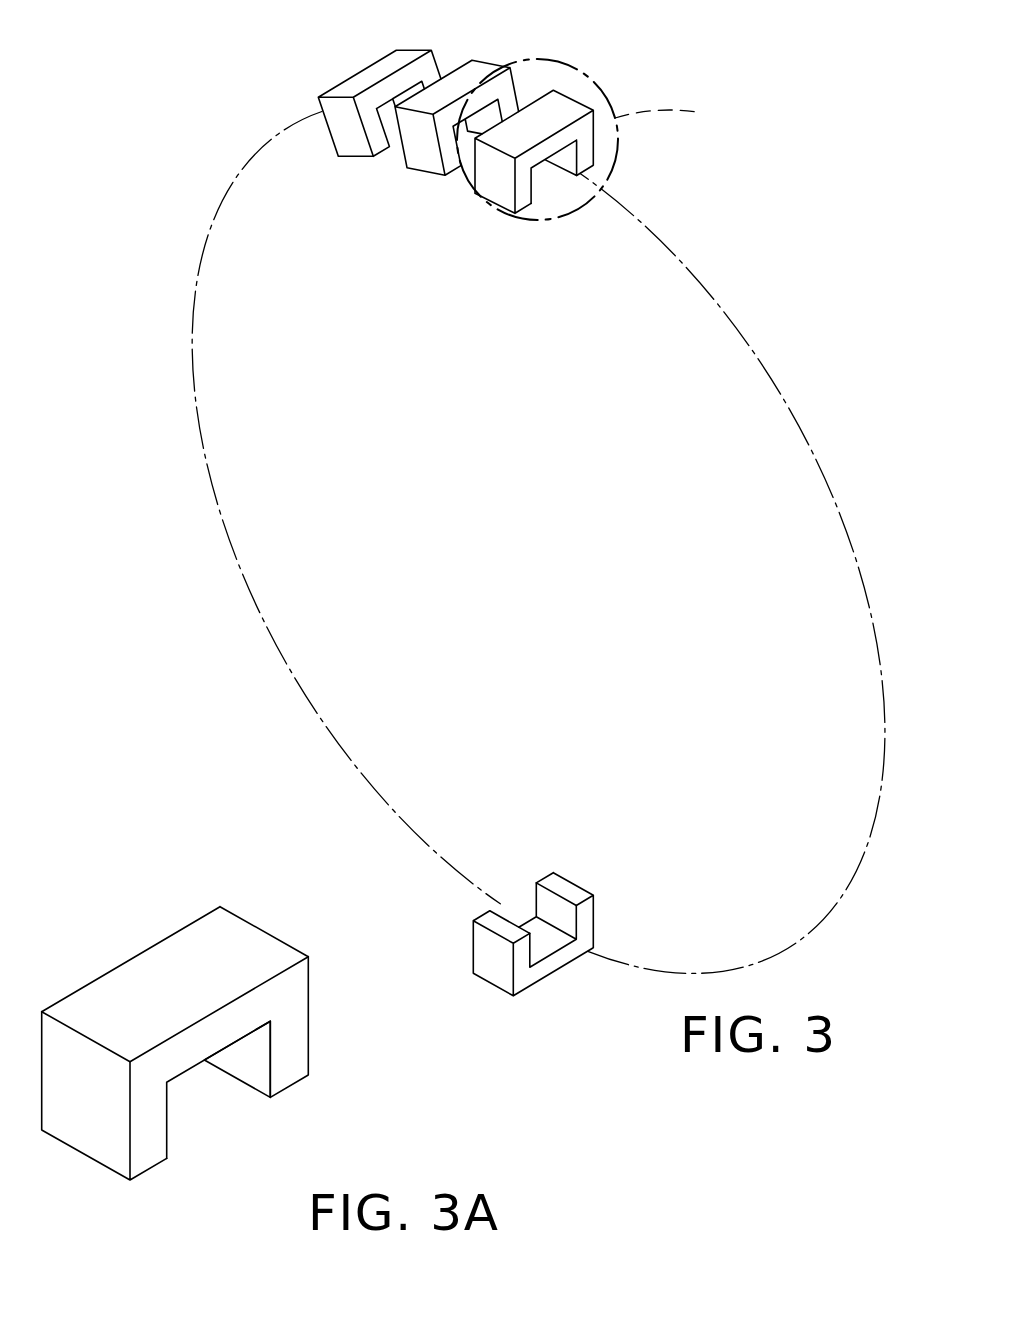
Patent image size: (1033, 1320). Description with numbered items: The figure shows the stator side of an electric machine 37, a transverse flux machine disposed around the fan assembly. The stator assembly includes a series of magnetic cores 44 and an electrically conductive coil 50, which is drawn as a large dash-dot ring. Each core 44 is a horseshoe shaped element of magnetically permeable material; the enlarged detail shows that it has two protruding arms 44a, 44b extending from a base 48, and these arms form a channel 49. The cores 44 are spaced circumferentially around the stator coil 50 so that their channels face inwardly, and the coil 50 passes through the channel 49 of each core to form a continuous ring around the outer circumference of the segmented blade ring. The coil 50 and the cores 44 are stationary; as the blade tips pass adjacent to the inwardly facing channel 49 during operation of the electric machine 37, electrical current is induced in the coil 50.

In FIG. 3, the electric machine 37 is at (112, 57).
In FIG. 3, the magnetic core 44 is at (435, 544).
In FIG. 3A, the magnetic core 44 is at (224, 1060).
In FIG. 3A, the protruding arm 44a is at (88, 1130).
In FIG. 3A, the protruding arm 44b is at (290, 1062).
In FIG. 3A, the base 48 is at (203, 1033).
In FIG. 3, the channel 49 is at (542, 192).
In FIG. 3A, the channel 49 is at (185, 1104).
In FIG. 3, the coil 50 is at (756, 323).